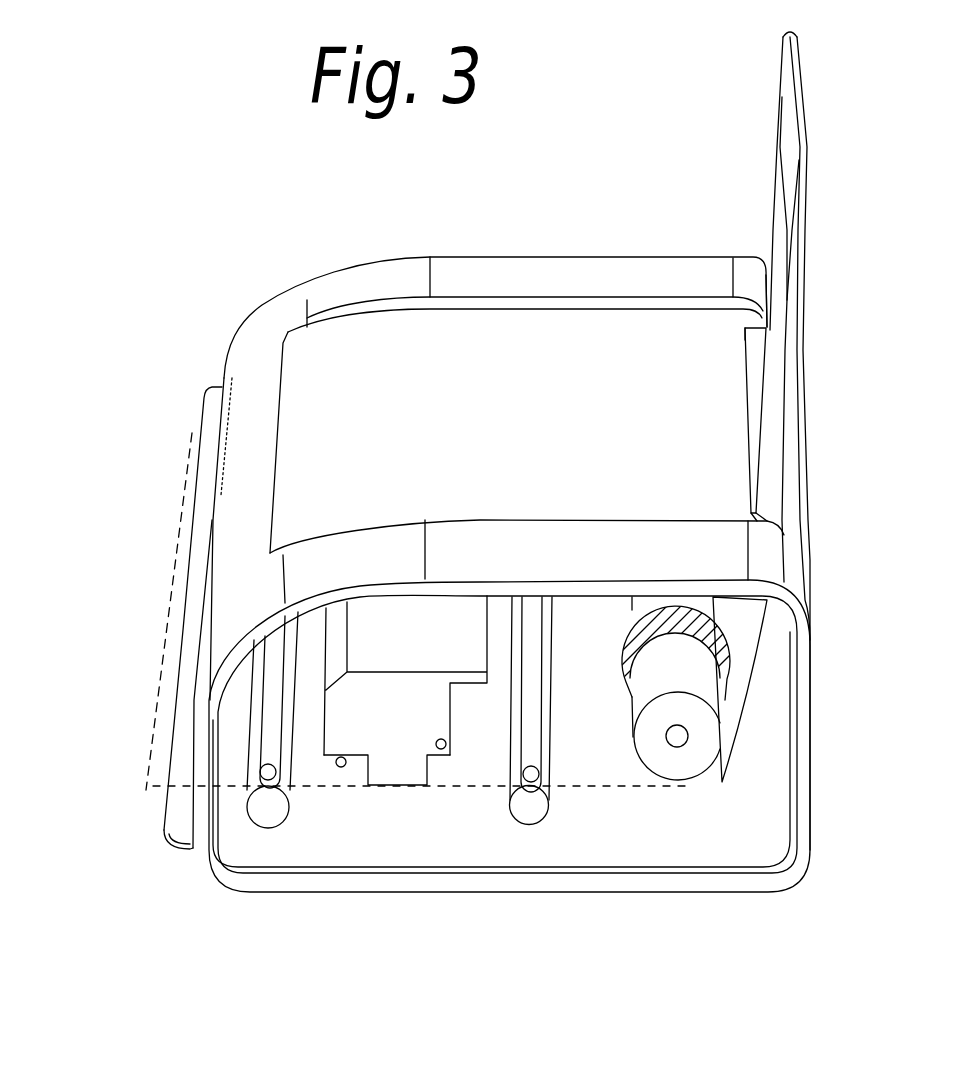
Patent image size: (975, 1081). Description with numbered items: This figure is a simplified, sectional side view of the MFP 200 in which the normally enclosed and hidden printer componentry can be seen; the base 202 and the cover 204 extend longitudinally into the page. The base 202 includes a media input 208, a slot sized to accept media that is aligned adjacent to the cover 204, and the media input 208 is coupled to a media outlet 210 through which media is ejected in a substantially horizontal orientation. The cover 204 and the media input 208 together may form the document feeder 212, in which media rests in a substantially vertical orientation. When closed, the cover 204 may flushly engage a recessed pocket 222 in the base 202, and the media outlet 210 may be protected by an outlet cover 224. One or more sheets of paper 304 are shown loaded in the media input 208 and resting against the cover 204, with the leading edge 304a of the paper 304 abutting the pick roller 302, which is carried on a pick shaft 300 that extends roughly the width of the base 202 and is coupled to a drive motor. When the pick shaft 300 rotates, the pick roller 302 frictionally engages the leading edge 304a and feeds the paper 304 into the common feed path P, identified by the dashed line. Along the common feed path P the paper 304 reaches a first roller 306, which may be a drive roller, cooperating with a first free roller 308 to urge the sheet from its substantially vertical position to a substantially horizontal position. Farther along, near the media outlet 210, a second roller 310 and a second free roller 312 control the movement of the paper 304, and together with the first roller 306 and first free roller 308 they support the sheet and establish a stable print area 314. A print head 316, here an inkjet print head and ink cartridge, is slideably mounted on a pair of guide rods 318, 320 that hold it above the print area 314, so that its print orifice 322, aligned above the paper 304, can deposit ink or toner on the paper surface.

The MFP 200 is at (248, 145).
The base 202 is at (250, 317).
The cover 204 is at (782, 97).
The media input 208 is at (772, 497).
The media outlet 210 is at (180, 767).
The document feeder 212 is at (695, 180).
The pocket 222 is at (537, 356).
The outlet cover 224 is at (170, 847).
The pick shaft 300 is at (680, 782).
The pick roller 302 is at (631, 700).
The paper 304 is at (775, 357).
The leading edge 304a is at (742, 703).
The first roller 306 is at (530, 826).
The first free roller 308 is at (537, 770).
The second roller 310 is at (265, 830).
The second free roller 312 is at (262, 782).
The print area 314 is at (320, 803).
The print head 316 is at (392, 706).
The guide rod 318 is at (348, 757).
The guide rod 320 is at (447, 742).
The print orifice 322 is at (395, 787).
The common feed path P is at (467, 787).